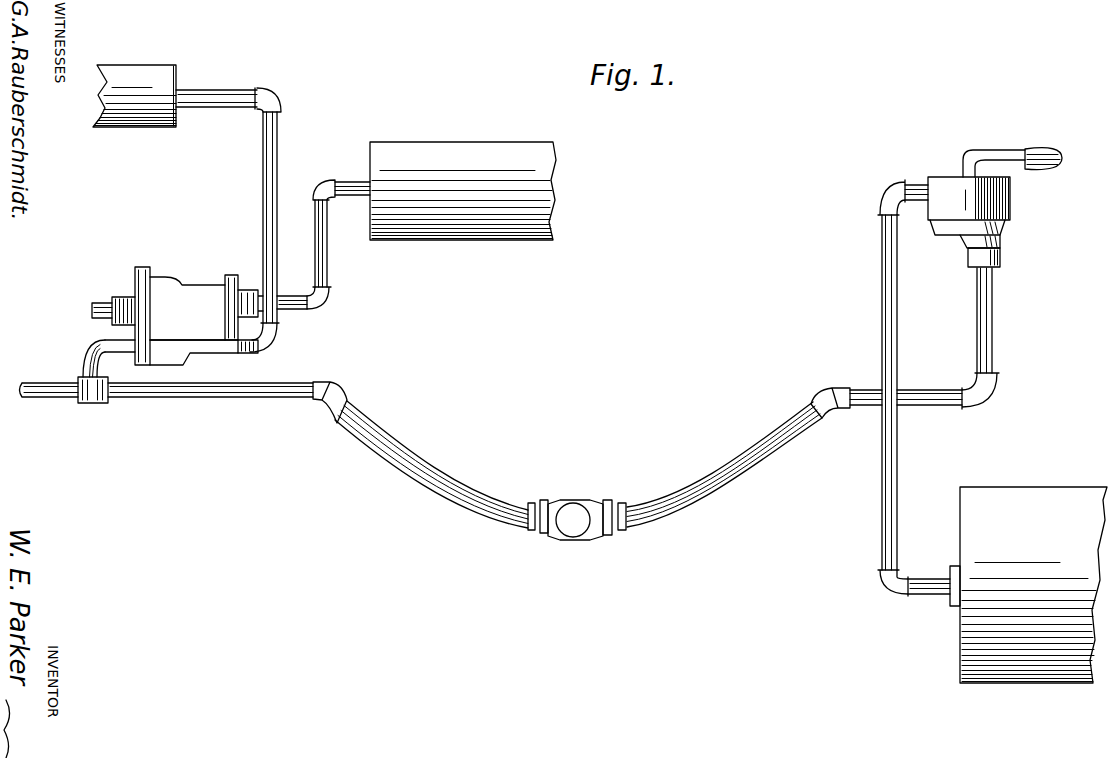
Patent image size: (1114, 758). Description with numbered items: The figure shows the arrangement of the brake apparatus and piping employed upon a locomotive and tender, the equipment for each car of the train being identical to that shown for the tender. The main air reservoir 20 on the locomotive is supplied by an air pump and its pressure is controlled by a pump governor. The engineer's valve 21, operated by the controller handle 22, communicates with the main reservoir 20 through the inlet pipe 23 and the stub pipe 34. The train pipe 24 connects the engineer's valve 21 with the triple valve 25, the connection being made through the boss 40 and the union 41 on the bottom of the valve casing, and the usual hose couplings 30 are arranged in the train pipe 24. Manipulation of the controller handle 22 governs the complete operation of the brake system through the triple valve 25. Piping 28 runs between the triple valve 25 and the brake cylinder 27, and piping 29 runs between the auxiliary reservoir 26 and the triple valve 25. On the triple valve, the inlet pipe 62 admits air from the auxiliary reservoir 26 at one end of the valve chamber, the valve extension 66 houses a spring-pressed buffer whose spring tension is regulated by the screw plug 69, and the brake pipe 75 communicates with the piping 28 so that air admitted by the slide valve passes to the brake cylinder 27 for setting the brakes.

The main air reservoir 20 is at (1045, 472).
The engineer's valve 21 is at (1008, 202).
The controller handle 22 is at (1037, 156).
The inlet pipe 23 is at (882, 316).
The train pipe 24 is at (205, 400).
The triple valve 25 is at (166, 280).
The auxiliary reservoir 26 is at (404, 240).
The brake cylinder 27 is at (138, 67).
The piping 28 is at (289, 124).
The piping 29 is at (330, 277).
The hose couplings 30 is at (474, 497).
The stub pipe 34 is at (916, 188).
The boss 40 is at (1003, 246).
The union 41 is at (1002, 256).
The inlet pipe 62 is at (260, 290).
The valve extension 66 is at (123, 300).
The screw plug 69 is at (92, 311).
The brake pipe 75 is at (240, 352).